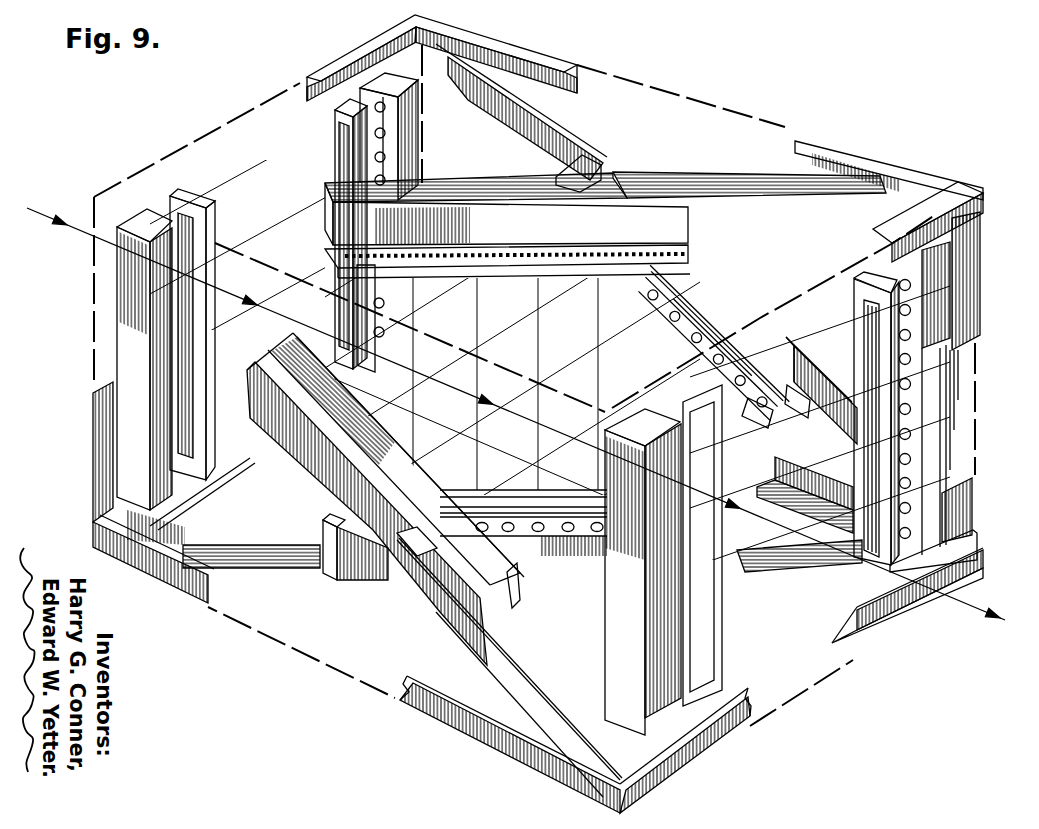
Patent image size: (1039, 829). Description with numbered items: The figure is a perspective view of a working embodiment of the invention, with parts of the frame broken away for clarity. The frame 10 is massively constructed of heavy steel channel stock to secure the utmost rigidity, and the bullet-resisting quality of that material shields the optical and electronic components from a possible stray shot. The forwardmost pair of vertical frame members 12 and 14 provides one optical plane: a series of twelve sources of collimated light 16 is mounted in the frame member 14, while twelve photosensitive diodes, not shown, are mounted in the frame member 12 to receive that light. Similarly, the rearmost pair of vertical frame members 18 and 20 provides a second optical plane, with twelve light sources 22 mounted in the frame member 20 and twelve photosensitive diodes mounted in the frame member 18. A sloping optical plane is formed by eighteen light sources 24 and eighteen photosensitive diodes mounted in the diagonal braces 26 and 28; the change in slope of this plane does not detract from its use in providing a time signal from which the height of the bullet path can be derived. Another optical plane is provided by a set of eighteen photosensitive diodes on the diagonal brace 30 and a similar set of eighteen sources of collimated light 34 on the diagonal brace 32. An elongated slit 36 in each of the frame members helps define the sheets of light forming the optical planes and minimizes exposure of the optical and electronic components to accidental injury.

The frame 10 is at (766, 115).
The vertical frame member 12 is at (100, 415).
The vertical frame member 14 is at (405, 62).
The sources of collimated light 16 is at (384, 131).
The vertical frame member 18 is at (678, 748).
The vertical frame member 20 is at (967, 270).
The light sources 22 is at (920, 388).
The light sources 24 is at (693, 277).
The diagonal brace 26 is at (557, 127).
The diagonal brace 28 is at (397, 582).
The diagonal brace 30 is at (713, 174).
The diagonal brace 32 is at (227, 547).
The sources of collimated light 34 is at (568, 535).
The elongated slit 36 is at (350, 147).